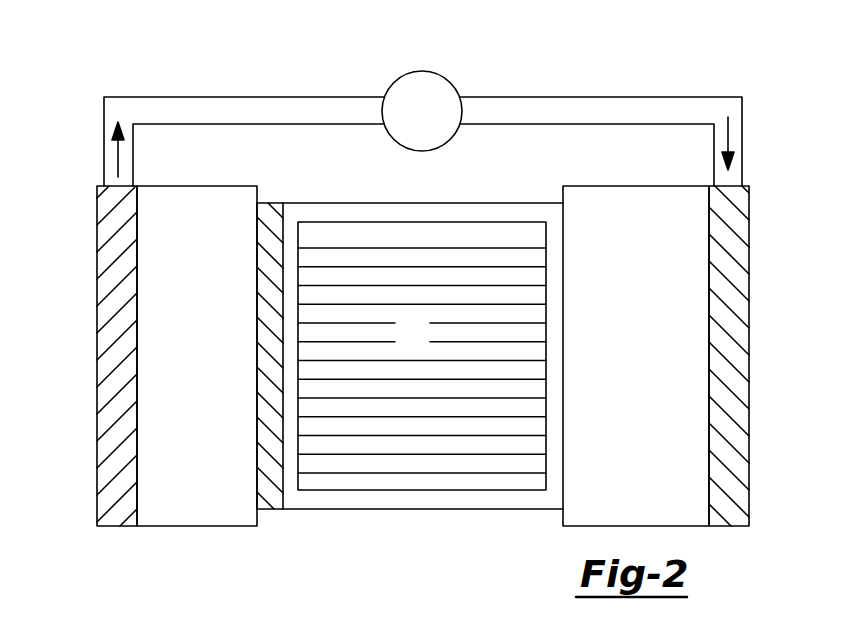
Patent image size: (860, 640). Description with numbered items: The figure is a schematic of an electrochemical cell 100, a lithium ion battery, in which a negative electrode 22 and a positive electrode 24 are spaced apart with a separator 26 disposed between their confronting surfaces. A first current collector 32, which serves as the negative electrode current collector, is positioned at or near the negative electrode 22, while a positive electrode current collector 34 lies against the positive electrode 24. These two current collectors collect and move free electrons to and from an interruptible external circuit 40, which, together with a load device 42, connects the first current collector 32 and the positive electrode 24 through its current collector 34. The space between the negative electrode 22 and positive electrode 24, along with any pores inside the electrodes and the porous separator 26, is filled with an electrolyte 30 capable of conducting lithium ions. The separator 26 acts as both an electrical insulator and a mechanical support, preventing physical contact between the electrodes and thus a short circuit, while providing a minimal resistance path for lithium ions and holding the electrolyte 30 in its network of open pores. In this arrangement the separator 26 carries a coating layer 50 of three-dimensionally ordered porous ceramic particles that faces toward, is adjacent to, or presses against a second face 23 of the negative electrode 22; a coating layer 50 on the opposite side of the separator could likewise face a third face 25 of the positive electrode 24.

The electrochemical cell 100 is at (152, 47).
The negative electrode 22 is at (185, 330).
The second face of the negative electrode 23 is at (258, 477).
The positive electrode 24 is at (625, 364).
The third face of the positive electrode 25 is at (563, 485).
The separator 26 is at (407, 512).
The electrolyte 30 is at (400, 351).
The first current collector 32 is at (97, 267).
The positive electrode current collector 34 is at (749, 288).
The external circuit 40 is at (283, 97).
The load device 42 is at (410, 124).
The coating layer 50 is at (268, 415).